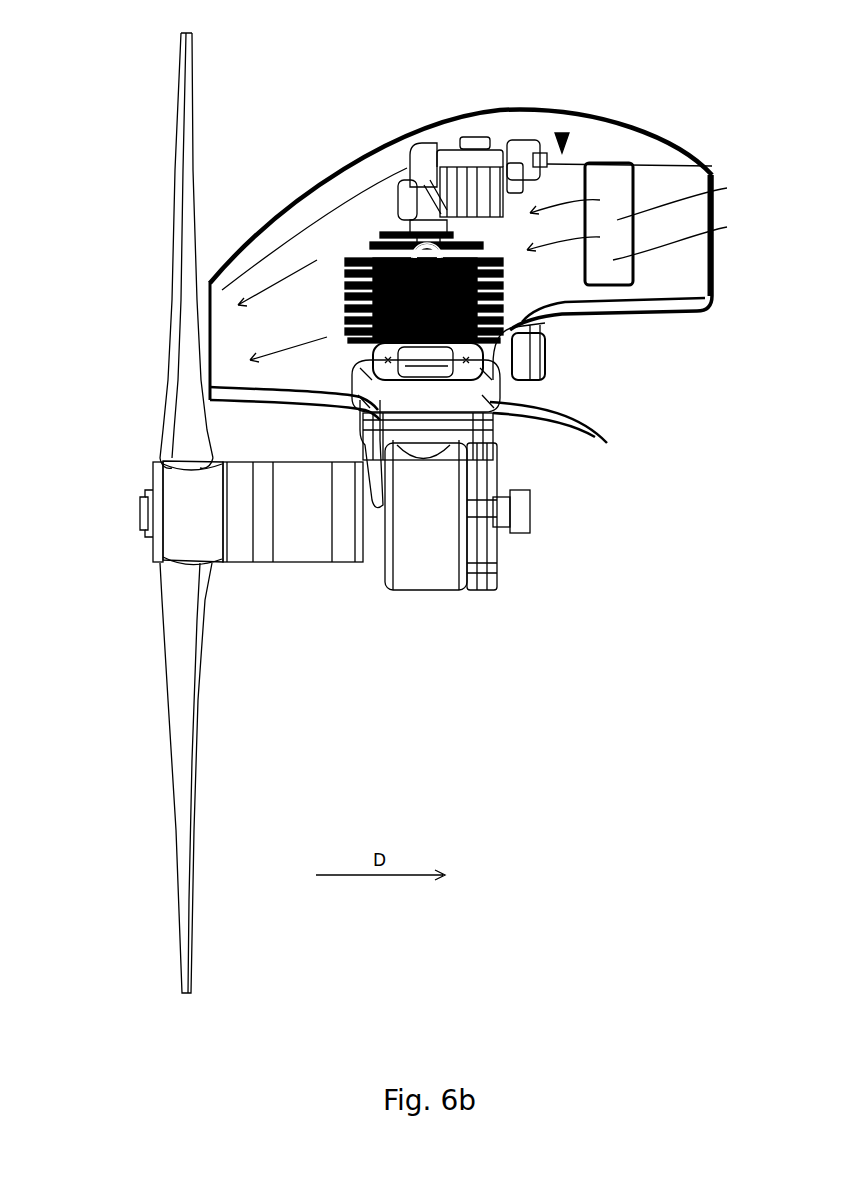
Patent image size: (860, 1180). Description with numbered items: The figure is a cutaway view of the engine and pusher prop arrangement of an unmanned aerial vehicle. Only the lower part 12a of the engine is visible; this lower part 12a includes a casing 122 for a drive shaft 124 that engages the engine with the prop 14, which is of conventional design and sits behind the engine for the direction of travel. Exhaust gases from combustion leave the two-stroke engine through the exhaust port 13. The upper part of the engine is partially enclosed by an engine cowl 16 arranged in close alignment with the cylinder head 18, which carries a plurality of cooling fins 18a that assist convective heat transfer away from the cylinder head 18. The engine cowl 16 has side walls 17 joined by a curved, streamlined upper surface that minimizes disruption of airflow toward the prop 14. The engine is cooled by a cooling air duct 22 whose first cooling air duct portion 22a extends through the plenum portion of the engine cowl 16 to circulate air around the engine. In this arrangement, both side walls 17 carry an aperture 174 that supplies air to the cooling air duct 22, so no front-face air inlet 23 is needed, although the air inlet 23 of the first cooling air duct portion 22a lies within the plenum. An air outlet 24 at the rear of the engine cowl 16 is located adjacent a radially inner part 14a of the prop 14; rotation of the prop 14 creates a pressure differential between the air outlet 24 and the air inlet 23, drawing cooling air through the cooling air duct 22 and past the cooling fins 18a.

The lower part of engine 12a is at (427, 557).
The exhaust port 13 is at (430, 355).
The prop 14 is at (177, 212).
The radially inner part of the prop 14a is at (167, 387).
The engine cowl 16 is at (562, 140).
The side walls 17 is at (440, 112).
The cylinder head 18 is at (363, 253).
The cooling fins 18a is at (713, 268).
The cooling air duct 22 is at (563, 313).
The first cooling air duct portion 22a is at (670, 187).
The air inlet 23 is at (610, 207).
The air outlet 24 is at (207, 327).
The casing 122 is at (297, 533).
The drive shaft 124 is at (140, 508).
The aperture 174 is at (610, 273).